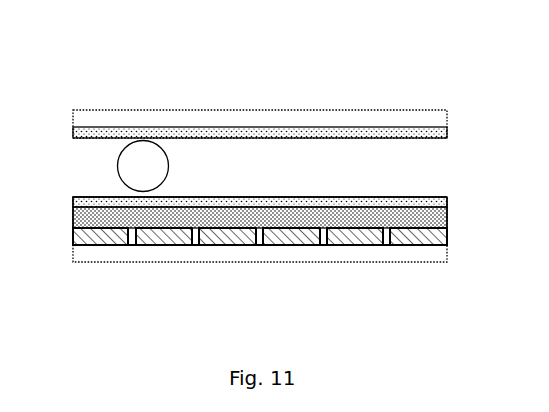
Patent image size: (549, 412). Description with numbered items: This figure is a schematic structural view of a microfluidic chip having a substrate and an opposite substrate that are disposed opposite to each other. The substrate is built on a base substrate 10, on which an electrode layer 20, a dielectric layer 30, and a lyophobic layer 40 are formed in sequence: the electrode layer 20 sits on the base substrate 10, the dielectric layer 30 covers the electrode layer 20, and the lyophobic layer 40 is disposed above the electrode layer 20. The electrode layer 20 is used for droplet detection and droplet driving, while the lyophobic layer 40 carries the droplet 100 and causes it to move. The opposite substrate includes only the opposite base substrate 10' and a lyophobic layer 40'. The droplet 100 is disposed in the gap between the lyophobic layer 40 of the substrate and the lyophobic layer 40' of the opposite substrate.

The base substrate 10 is at (252, 264).
The electrode layer 20 is at (260, 280).
The dielectric layer 30 is at (260, 269).
The lyophobic layer 40 is at (266, 264).
The opposite base substrate 10' is at (253, 76).
The lyophobic layer of the opposite substrate 40' is at (267, 76).
The droplet 100 is at (170, 103).